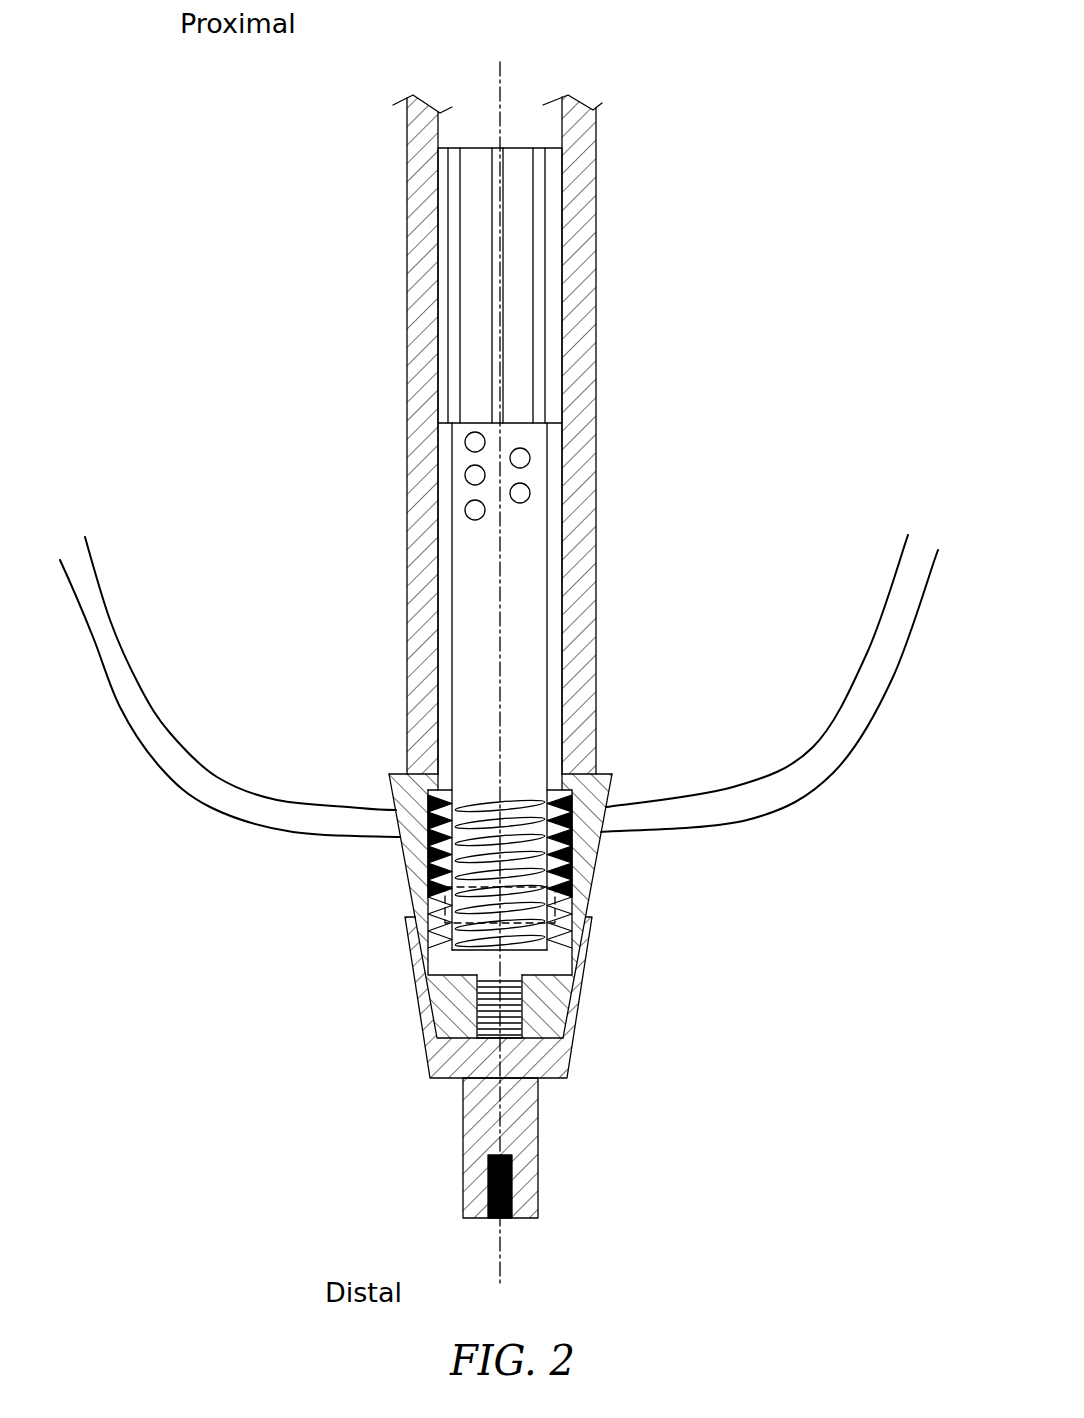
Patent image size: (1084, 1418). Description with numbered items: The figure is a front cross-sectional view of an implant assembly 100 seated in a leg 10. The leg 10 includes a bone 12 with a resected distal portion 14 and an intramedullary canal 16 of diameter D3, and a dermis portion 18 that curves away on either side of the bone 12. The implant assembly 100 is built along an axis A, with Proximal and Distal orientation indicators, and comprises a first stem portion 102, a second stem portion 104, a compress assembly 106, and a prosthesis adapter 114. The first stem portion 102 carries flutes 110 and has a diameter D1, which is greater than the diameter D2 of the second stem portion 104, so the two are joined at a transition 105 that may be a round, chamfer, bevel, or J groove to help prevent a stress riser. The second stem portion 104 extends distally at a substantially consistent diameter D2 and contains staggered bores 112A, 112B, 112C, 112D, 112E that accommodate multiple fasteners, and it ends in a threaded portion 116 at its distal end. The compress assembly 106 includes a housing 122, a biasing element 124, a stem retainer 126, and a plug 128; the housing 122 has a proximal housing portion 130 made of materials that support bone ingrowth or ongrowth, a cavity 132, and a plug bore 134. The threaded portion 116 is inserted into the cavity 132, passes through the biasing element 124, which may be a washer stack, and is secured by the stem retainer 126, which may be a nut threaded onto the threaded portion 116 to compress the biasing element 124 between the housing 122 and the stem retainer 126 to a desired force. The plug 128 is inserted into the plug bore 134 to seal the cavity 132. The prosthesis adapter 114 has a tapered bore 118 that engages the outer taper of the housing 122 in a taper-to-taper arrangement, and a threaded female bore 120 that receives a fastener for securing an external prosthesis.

The leg 10 is at (836, 490).
The bone 12 is at (423, 267).
The resected distal portion 14 is at (410, 757).
The intramedullary canal 16 is at (565, 745).
The dermis portion 18 is at (105, 627).
The implant assembly 100 is at (521, 110).
The first stem portion 102 is at (558, 207).
The second stem portion 104 is at (535, 607).
The transition 105 is at (557, 424).
The compress assembly 106 is at (661, 884).
The flutes 110 is at (535, 275).
The bore 112A is at (468, 436).
The bore 112B is at (468, 470).
The bore 112C is at (468, 505).
The bore 112D is at (530, 455).
The bore 112E is at (531, 490).
The prosthesis adapter 114 is at (539, 1146).
The threaded portion 116 is at (580, 857).
The tapered bore 118 is at (567, 1015).
The threaded female bore 120 is at (488, 1193).
The housing 122 is at (586, 892).
The biasing element 124 is at (405, 838).
The stem retainer 126 is at (555, 922).
The plug 128 is at (477, 1033).
The proximal housing portion 130 is at (393, 776).
The cavity 132 is at (547, 962).
The plug bore 134 is at (476, 982).
The diameter of first stem portion D1 is at (673, 306).
The diameter of second stem portion D2 is at (673, 563).
The diameter of intramedullary canal D3 is at (673, 650).
The axis A is at (498, 1092).